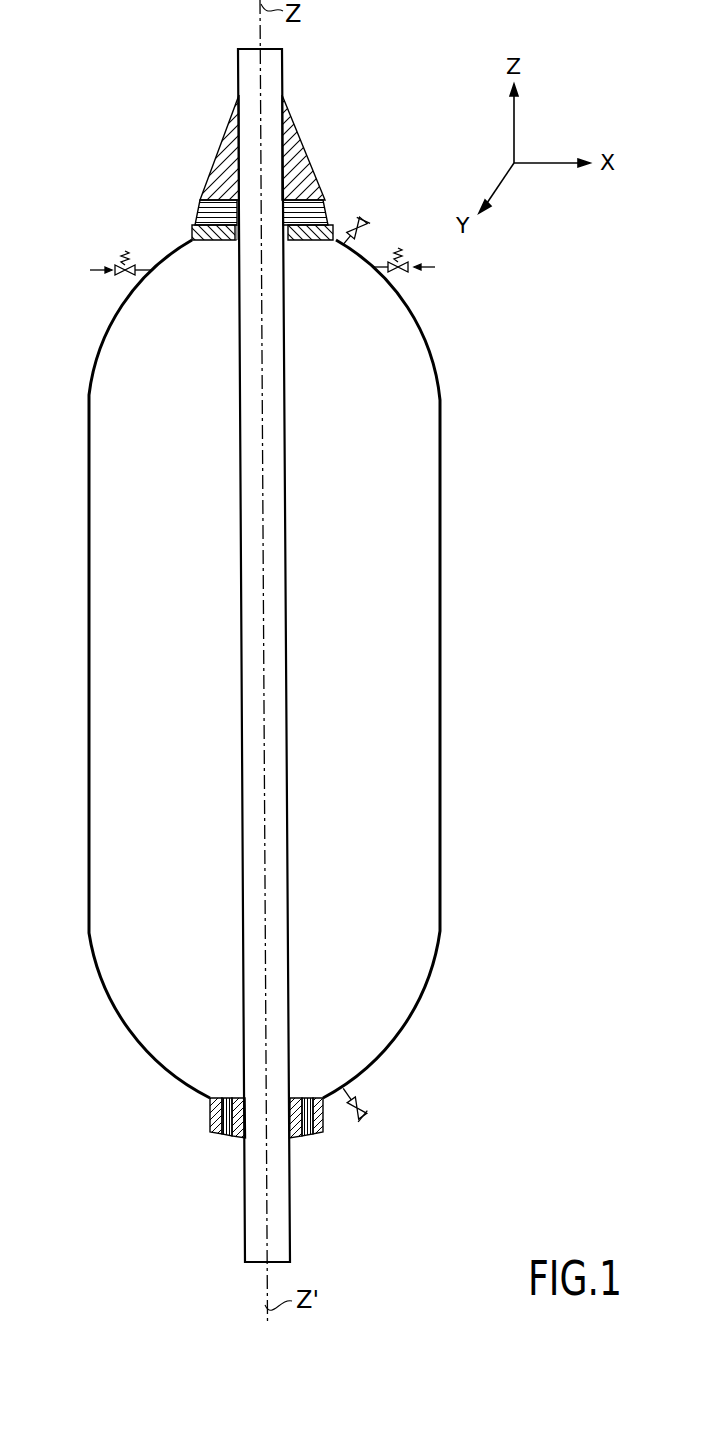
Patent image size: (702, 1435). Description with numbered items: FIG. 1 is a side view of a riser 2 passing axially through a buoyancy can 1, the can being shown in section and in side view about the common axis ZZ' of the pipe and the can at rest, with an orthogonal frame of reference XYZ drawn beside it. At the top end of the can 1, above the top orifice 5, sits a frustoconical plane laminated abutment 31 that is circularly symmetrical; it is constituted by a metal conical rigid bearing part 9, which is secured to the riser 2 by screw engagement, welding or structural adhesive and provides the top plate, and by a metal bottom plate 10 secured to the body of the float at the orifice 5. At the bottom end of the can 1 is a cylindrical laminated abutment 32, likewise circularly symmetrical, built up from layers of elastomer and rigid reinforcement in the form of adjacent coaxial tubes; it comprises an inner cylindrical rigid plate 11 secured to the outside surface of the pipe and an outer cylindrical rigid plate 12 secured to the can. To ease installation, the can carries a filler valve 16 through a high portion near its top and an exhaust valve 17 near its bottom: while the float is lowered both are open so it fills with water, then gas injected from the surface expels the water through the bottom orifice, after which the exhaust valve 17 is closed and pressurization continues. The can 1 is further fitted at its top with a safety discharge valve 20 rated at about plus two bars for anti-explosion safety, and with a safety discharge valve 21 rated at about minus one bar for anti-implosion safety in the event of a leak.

The can 1 is at (453, 662).
The riser 2 is at (250, 627).
The top orifice 5 is at (235, 241).
The rigid bearing part 9 is at (298, 142).
The metal bottom plate 10 is at (192, 232).
The inner cylindrical rigid plate 11 is at (240, 1141).
The outer cylindrical rigid plate 12 is at (323, 1125).
The filler valve 16 is at (363, 221).
The exhaust valve 17 is at (366, 1116).
The safety discharge valve 20 is at (123, 279).
The safety discharge valve 21 is at (402, 277).
The frustoconical plane laminated abutment 31 is at (197, 207).
The cylindrical laminated abutment 32 is at (225, 1139).